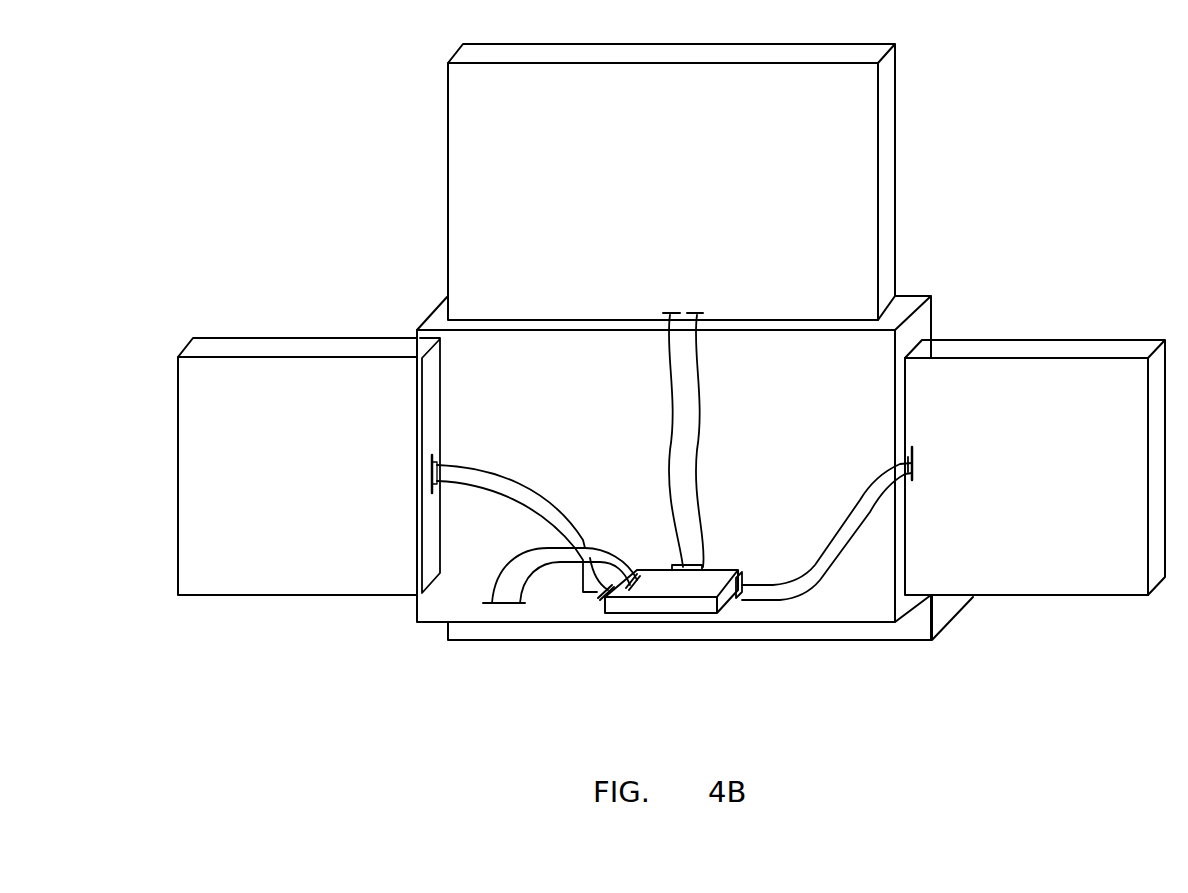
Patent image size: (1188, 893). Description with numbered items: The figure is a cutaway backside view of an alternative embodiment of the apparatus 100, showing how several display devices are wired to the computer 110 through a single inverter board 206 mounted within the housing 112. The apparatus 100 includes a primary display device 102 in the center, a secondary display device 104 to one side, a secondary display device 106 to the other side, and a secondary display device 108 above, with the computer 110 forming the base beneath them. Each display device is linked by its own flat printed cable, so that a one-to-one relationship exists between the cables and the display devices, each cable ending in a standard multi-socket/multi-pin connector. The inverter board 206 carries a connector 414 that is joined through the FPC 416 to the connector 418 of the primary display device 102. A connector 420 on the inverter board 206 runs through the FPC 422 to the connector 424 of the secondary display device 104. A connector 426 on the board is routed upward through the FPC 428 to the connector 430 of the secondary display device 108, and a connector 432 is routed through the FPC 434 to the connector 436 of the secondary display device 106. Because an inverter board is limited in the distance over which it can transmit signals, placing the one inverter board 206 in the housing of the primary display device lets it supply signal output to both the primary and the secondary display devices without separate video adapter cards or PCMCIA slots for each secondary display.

The apparatus 100 is at (338, 197).
The primary display device 102 is at (880, 610).
The secondary display device 104 is at (1115, 557).
The secondary display device 106 is at (278, 562).
The secondary display device 108 is at (865, 295).
The computer 110 is at (447, 642).
The housing 112 is at (432, 313).
The inverter board 206 is at (698, 607).
The connector 414 is at (637, 587).
The FPC 416 is at (542, 570).
The connector 418 is at (503, 607).
The connector 420 is at (729, 569).
The FPC 422 is at (845, 507).
The connector 424 is at (913, 465).
The connector 426 is at (672, 565).
The FPC 428 is at (700, 418).
The connector 430 is at (680, 314).
The connector 432 is at (595, 602).
The FPC 434 is at (530, 478).
The connector 436 is at (437, 491).